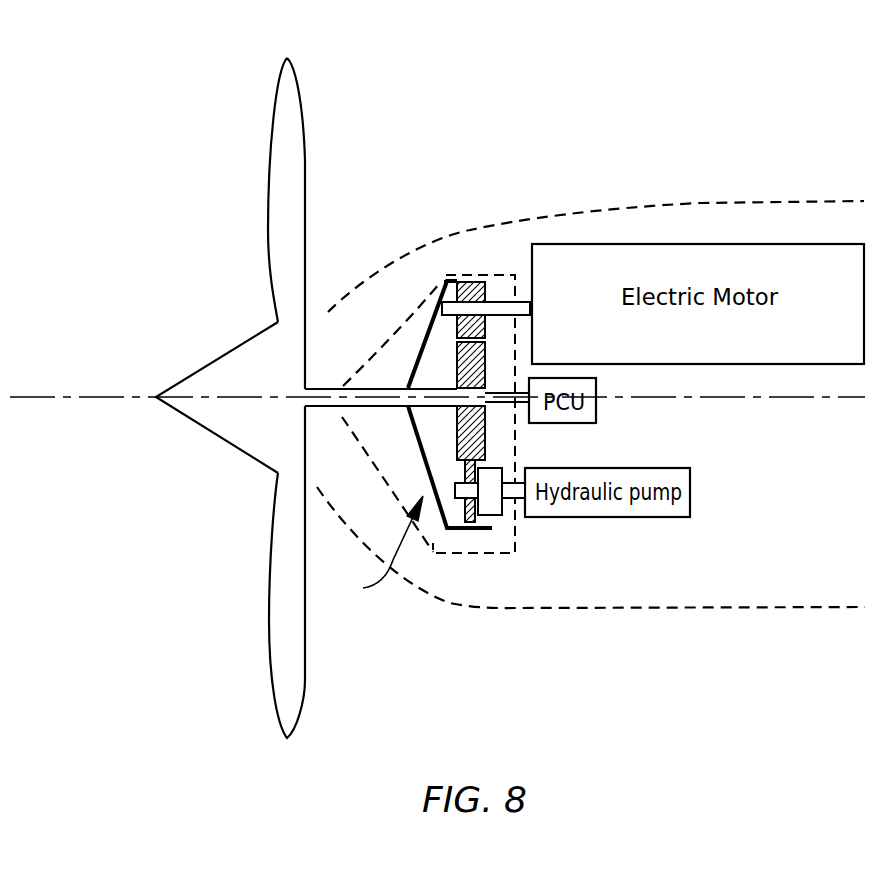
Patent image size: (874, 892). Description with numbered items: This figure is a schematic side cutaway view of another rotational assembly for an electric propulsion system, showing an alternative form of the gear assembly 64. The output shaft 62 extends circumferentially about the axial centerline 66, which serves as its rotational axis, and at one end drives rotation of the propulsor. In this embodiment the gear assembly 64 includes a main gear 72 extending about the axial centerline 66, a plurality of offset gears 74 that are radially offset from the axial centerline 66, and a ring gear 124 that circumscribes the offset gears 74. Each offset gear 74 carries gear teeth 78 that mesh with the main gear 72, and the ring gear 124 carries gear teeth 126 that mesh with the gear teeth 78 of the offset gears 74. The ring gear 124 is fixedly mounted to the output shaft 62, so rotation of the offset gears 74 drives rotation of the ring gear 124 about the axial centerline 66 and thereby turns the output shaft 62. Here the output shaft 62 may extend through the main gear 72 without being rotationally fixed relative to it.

The output shaft 62 is at (378, 407).
The gear assembly 64 is at (379, 548).
The axial centerline 66 is at (110, 397).
The main gear 72 is at (470, 433).
The offset gears 74 is at (495, 278).
The gear teeth 78 is at (472, 281).
The ring gear 124 is at (428, 318).
The gear teeth 126 is at (453, 518).